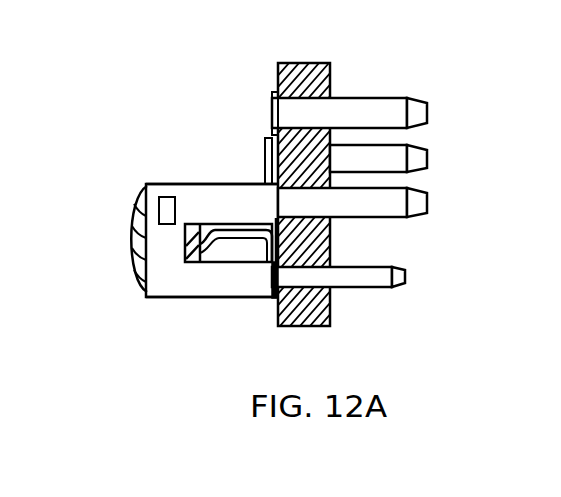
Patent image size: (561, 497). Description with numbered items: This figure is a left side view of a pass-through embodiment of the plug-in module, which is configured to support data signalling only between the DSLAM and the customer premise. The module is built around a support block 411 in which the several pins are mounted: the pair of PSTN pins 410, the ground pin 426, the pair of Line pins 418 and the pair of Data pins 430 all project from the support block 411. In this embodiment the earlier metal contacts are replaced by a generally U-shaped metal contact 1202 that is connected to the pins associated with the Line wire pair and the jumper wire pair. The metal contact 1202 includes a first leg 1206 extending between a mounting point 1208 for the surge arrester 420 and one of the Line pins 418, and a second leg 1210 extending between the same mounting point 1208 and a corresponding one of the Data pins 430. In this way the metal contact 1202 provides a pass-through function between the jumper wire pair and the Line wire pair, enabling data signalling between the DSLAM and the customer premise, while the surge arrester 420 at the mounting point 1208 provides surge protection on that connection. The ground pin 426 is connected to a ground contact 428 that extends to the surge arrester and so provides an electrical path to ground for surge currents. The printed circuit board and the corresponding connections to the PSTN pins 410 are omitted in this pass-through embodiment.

The support block 411 is at (297, 63).
The PSTN pins 410 is at (434, 110).
The ground pin 426 is at (427, 160).
The Line pins 418 is at (436, 204).
The Data pins 430 is at (417, 277).
The metal contact 1202 is at (248, 216).
The first leg 1206 is at (228, 176).
The mounting point 1208 is at (168, 197).
The second leg 1210 is at (232, 306).
The surge arrester 420 is at (140, 225).
The ground contact 428 is at (232, 243).